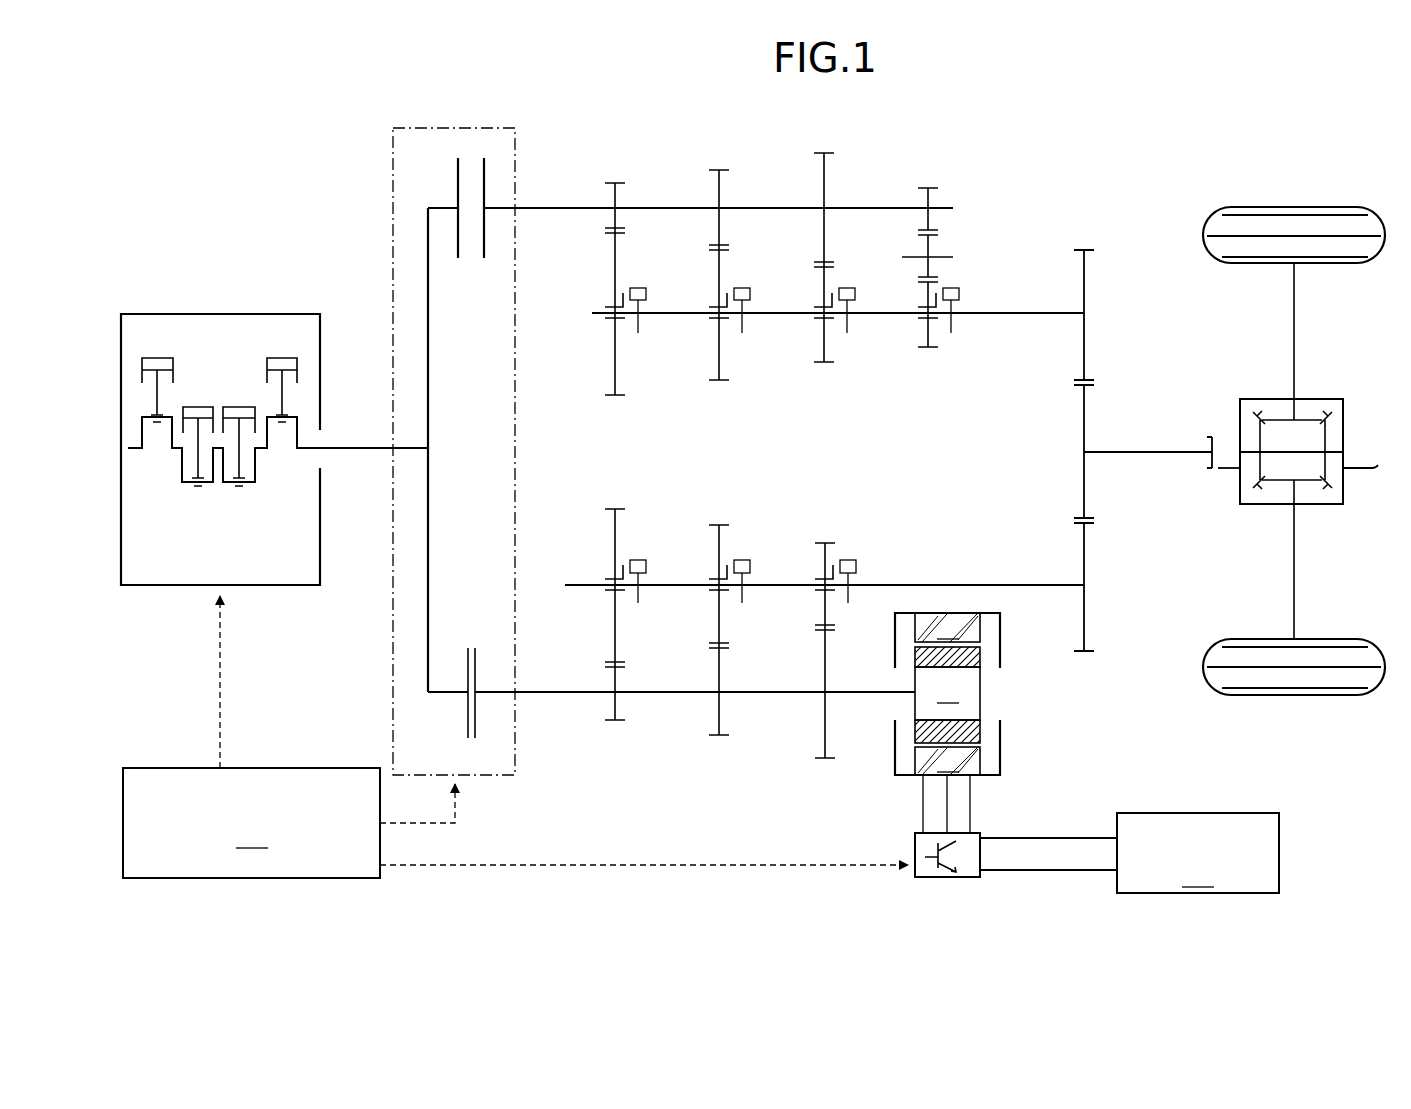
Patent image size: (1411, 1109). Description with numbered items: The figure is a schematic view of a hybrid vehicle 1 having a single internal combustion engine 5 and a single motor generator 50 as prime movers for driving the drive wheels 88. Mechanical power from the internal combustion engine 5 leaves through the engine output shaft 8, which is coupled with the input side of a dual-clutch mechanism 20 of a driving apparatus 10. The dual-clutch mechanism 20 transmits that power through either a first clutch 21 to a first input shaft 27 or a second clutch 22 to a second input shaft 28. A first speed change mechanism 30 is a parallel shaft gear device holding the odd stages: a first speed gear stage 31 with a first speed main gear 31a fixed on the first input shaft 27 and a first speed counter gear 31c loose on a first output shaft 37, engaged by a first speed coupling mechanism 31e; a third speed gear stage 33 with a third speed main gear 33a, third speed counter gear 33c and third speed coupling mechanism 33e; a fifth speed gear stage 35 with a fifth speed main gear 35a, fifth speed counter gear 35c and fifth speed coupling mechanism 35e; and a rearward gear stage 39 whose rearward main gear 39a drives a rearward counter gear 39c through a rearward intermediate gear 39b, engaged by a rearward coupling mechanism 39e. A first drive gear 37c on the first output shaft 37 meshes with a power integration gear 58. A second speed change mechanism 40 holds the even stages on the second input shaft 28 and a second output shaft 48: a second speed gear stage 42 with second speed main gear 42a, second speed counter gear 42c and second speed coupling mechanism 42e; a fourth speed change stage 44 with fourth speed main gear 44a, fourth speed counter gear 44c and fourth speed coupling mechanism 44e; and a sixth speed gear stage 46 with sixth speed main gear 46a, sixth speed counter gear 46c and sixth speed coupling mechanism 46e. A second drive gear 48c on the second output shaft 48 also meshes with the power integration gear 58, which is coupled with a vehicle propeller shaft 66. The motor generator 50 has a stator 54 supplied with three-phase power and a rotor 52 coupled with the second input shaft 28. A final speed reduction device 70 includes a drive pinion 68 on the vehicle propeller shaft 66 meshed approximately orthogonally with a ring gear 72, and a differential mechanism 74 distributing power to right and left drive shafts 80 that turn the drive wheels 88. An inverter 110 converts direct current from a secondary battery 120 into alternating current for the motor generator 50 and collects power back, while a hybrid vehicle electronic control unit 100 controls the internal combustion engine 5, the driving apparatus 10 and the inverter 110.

The hybrid vehicle 1 is at (1344, 108).
The internal combustion engine 5 is at (260, 296).
The engine output shaft 8 is at (369, 447).
The driving apparatus 10 is at (1054, 112).
The dual-clutch mechanism 20 is at (501, 124).
The first clutch 21 is at (472, 284).
The second clutch 22 is at (472, 624).
The first input shaft 27 is at (535, 212).
The second input shaft 28 is at (537, 690).
The first speed change mechanism 30 is at (888, 371).
The first speed gear stage 31 is at (614, 178).
The first speed main gear 31a is at (612, 200).
The first speed counter gear 31c is at (612, 272).
The first speed coupling mechanism 31e is at (646, 294).
The third speed gear stage 33 is at (718, 165).
The third speed main gear 33a is at (717, 200).
The third speed counter gear 33c is at (717, 267).
The third speed coupling mechanism 33e is at (750, 294).
The fifth speed gear stage 35 is at (822, 146).
The fifth speed main gear 35a is at (821, 200).
The fifth speed counter gear 35c is at (821, 280).
The fifth speed coupling mechanism 35e is at (855, 294).
The first output shaft 37 is at (1007, 318).
The first drive gear 37c is at (1086, 284).
The rearward gear stage 39 is at (926, 178).
The rearward main gear 39a is at (926, 200).
The rearward intermediate gear 39b is at (926, 248).
The rearward counter gear 39c is at (926, 338).
The rearward coupling mechanism 39e is at (959, 294).
The second speed change mechanism 40 is at (866, 514).
The second speed gear stage 42 is at (609, 737).
The second speed main gear 42a is at (612, 712).
The second speed counter gear 42c is at (612, 614).
The second speed coupling mechanism 42e is at (646, 566).
The fourth speed change stage 44 is at (715, 752).
The fourth speed main gear 44a is at (717, 714).
The fourth speed counter gear 44c is at (717, 617).
The fourth speed coupling mechanism 44e is at (750, 566).
The sixth speed gear stage 46 is at (819, 772).
The sixth speed main gear 46a is at (821, 714).
The sixth speed counter gear 46c is at (821, 612).
The sixth speed coupling mechanism 46e is at (856, 566).
The second output shaft 48 is at (965, 582).
The second drive gear 48c is at (1086, 615).
The motor generator 50 is at (1018, 740).
The rotor 52 is at (947, 695).
The stator 54 is at (947, 694).
The power integration gear 58 is at (1086, 476).
The vehicle propeller shaft 66 is at (1154, 448).
The drive pinion 68 is at (1208, 469).
The final speed reduction device 70 is at (1334, 384).
The ring gear 72 is at (1218, 470).
The differential mechanism 74 is at (1345, 428).
The drive shafts 80 is at (1296, 617).
The drive wheels 88 is at (1293, 206).
The hybrid vehicle electronic control unit 100 is at (515, 737).
The inverter 110 is at (978, 836).
The secondary battery 120 is at (1198, 853).